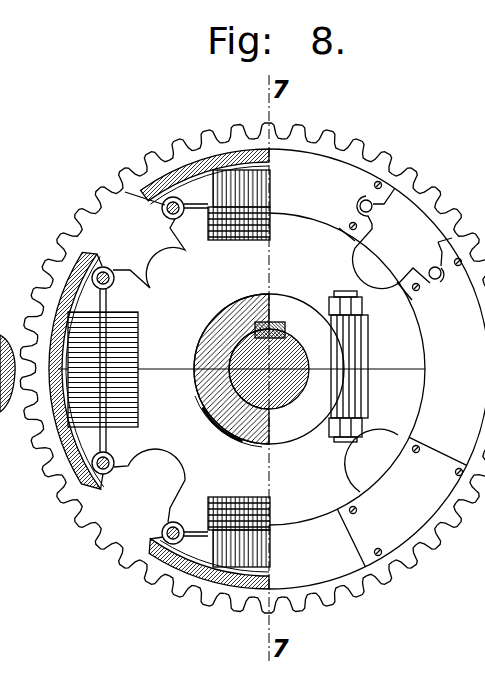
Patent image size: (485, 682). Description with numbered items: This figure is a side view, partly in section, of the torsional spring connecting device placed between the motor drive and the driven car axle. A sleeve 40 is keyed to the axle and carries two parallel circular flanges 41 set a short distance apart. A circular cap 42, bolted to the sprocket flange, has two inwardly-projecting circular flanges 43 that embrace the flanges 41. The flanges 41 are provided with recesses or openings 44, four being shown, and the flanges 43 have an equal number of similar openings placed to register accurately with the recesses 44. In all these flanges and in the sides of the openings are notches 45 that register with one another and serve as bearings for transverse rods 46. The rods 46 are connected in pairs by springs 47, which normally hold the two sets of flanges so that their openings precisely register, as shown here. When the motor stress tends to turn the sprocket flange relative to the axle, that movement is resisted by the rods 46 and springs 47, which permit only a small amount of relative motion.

The sleeve 40 is at (285, 314).
The circular flanges 41 is at (258, 370).
The circular cap 42 is at (169, 158).
The inwardly-projecting circular flanges 43 is at (368, 371).
The recesses or openings 44 is at (270, 363).
The notches 45 is at (380, 217).
The transverse rods 46 is at (162, 210).
The springs 47 is at (236, 226).